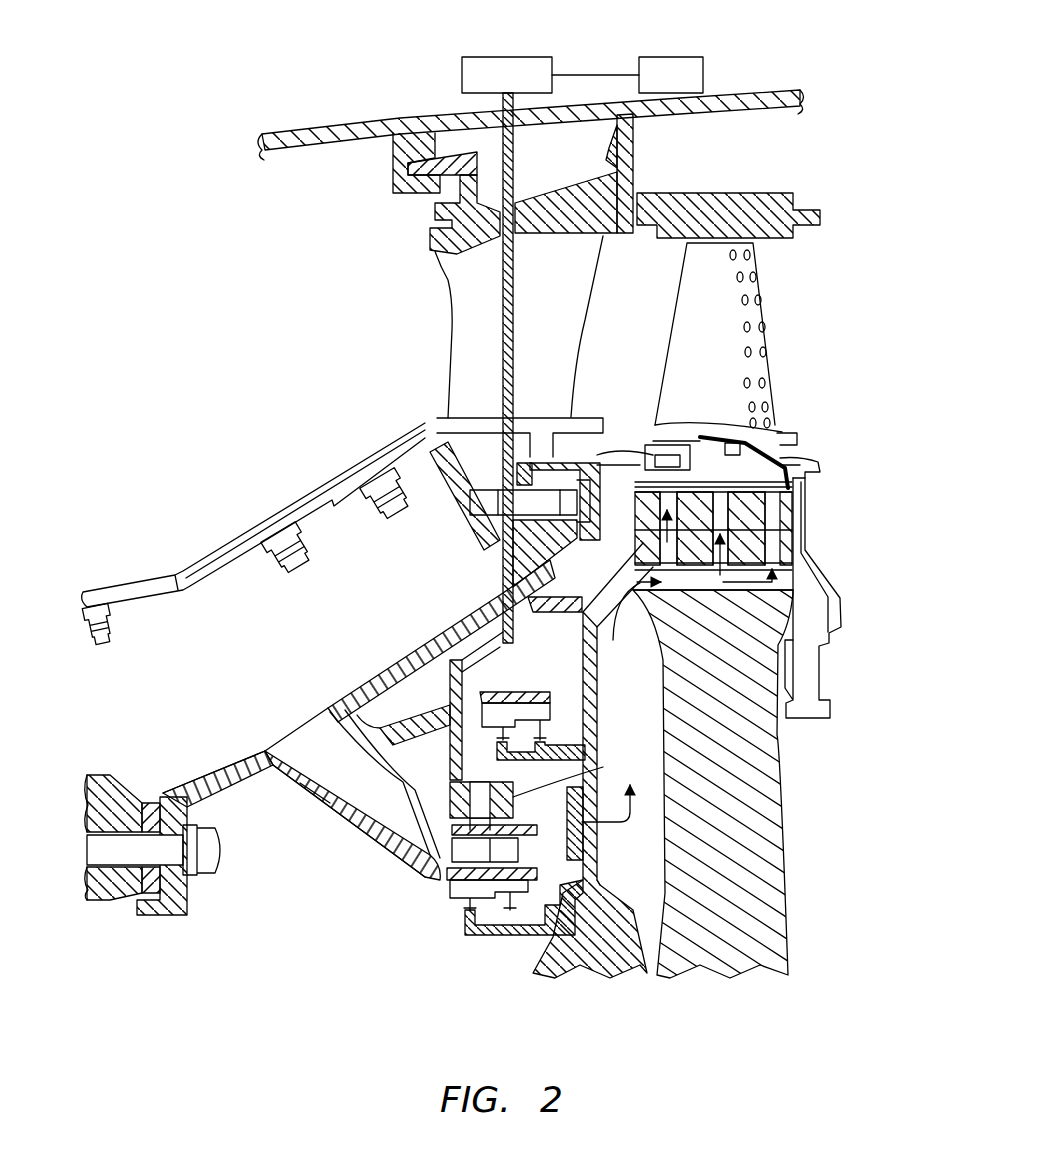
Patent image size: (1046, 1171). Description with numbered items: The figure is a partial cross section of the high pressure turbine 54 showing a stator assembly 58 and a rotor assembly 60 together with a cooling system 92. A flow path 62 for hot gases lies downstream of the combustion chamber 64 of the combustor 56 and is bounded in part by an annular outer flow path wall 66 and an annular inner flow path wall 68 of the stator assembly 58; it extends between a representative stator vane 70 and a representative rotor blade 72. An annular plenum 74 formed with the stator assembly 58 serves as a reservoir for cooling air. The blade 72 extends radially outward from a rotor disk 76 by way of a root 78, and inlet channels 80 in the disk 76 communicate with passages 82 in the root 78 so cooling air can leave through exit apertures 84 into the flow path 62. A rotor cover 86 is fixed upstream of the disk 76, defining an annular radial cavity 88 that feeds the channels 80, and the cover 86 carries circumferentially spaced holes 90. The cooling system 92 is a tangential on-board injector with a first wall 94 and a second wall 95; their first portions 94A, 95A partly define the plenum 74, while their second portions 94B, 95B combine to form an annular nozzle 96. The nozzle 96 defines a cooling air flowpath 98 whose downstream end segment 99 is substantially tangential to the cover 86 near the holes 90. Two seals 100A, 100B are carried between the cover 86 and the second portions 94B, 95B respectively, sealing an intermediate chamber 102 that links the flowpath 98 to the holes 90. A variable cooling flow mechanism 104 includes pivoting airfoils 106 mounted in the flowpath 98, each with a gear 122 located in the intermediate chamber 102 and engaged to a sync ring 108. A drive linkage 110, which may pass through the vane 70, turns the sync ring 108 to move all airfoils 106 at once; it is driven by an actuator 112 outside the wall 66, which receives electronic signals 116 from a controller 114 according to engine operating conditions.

The high pressure turbine 54 is at (193, 190).
The combustor 56 is at (300, 128).
The stator assembly 58 is at (376, 421).
The rotor assembly 60 is at (836, 346).
The flow path 62 is at (657, 302).
The combustion chamber 64 is at (250, 335).
The annular outer flow path wall 66 is at (544, 241).
The annular inner flow path wall 68 is at (533, 417).
The stator vane 70 is at (473, 292).
The rotor blade 72 is at (722, 300).
The annular plenum 74 is at (280, 619).
The rotor disk 76 is at (753, 768).
The rotor blade root 78 is at (786, 446).
The inlet channels 80 is at (694, 578).
The passages 82 is at (703, 440).
The exit apertures 84 is at (765, 327).
The rotor cover 86 is at (617, 696).
The annular radial cavity 88 is at (663, 914).
The holes 90 is at (583, 842).
The cooling system 92 is at (338, 838).
The first wall 94 is at (407, 648).
The first portion of first wall 94A is at (340, 700).
The second portion of first wall 94B is at (380, 687).
The second wall 95 is at (186, 788).
The first portion of second wall 95A is at (194, 792).
The second portion of second wall 95B is at (313, 789).
The annular nozzle 96 is at (385, 838).
The cooling air flowpath 98 is at (385, 789).
The end segment 99 is at (558, 873).
The first annular seal 100A is at (555, 728).
The second annular seal 100B is at (461, 904).
The intermediate chamber 102 is at (543, 897).
The variable cooling flow mechanism 104 is at (528, 774).
The pivoting airfoil 106 is at (457, 893).
The sync ring 108 is at (462, 848).
The drive linkage 110 is at (500, 565).
The actuator 112 is at (462, 73).
The controller 114 is at (703, 74).
The electronic signals 116 is at (597, 75).
The gear 122 is at (581, 787).